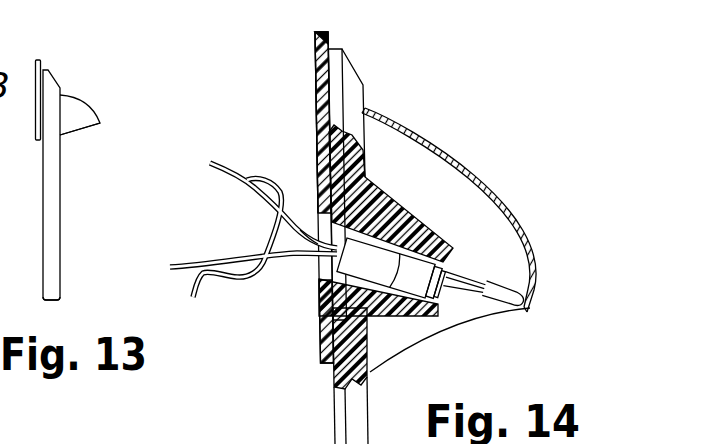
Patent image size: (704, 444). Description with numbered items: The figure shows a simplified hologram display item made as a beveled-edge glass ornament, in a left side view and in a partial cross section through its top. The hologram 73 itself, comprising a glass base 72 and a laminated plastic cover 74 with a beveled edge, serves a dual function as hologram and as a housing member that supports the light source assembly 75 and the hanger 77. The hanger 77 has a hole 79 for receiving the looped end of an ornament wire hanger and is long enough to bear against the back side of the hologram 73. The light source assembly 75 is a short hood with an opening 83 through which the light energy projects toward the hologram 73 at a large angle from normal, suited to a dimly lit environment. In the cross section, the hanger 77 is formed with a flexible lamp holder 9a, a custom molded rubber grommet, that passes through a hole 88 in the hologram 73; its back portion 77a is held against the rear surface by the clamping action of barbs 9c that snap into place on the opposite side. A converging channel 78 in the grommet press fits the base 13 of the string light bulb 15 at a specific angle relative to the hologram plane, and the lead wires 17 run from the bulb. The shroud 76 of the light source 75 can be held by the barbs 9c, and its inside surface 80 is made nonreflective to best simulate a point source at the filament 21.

In FIG. 14, the glass base 72 is at (323, 88).
In FIG. 13, the hologram 73 is at (62, 192).
In FIG. 14, the hologram 73 is at (370, 94).
In FIG. 13, the laminated plastic cover 74 is at (60, 295).
In FIG. 14, the laminated plastic cover 74 is at (350, 82).
In FIG. 13, the light source assembly 75 is at (83, 102).
In FIG. 14, the light source assembly 75 is at (457, 133).
In FIG. 14, the shroud 76 is at (510, 213).
In FIG. 13, the hanger 77 is at (36, 62).
In FIG. 14, the hanger 77 is at (315, 63).
In FIG. 14, the back portion 77a is at (314, 152).
In FIG. 14, the converging channel 78 is at (310, 220).
In FIG. 14, the hole 79 is at (328, 34).
In FIG. 14, the inside surface 80 is at (495, 193).
In FIG. 13, the opening 83 is at (84, 140).
In FIG. 14, the opening 83 is at (437, 348).
In FIG. 14, the hole 88 is at (317, 293).
In FIG. 14, the lamp holder 9a is at (440, 180).
In FIG. 14, the barbs 9c is at (368, 177).
In FIG. 14, the base 13 is at (440, 233).
In FIG. 14, the string light bulb 15 is at (485, 308).
In FIG. 14, the wires 17 is at (242, 193).
In FIG. 14, the filament 21 is at (495, 286).